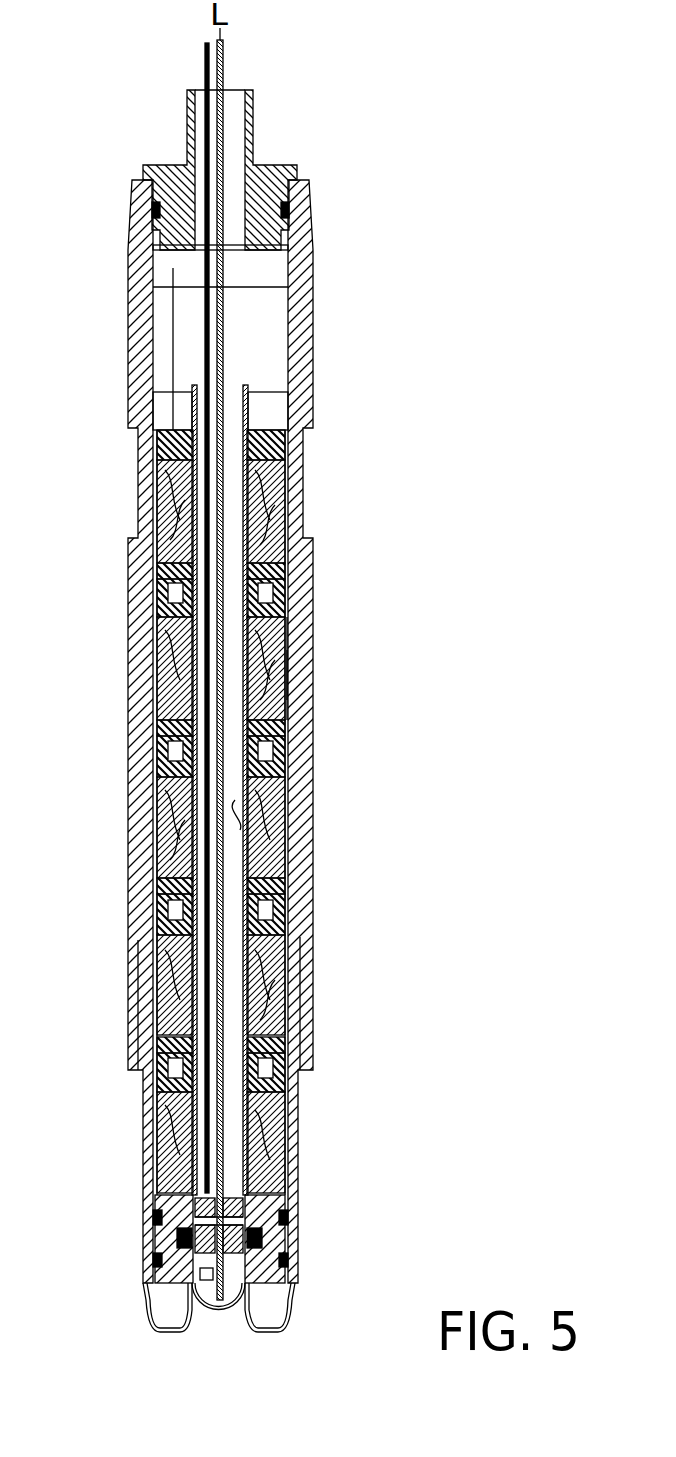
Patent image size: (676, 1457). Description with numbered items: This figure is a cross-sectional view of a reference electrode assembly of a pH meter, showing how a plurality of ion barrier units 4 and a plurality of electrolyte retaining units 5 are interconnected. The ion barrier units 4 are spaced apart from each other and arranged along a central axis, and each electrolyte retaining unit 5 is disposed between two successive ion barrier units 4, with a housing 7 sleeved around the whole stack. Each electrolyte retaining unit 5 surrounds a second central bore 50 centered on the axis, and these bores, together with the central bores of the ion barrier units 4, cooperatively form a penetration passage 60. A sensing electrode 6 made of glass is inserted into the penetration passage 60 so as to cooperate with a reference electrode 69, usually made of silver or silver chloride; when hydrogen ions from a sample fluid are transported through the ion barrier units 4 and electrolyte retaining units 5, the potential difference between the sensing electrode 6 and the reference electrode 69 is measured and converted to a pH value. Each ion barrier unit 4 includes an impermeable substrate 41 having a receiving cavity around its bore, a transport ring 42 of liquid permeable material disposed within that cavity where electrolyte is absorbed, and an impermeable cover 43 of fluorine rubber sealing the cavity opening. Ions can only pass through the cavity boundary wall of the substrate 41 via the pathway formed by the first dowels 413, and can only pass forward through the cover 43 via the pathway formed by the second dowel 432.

The ion barrier unit 4 is at (303, 585).
The electrolyte retaining unit 5 is at (278, 465).
The sensing electrode 6 is at (203, 1313).
The housing 7 is at (132, 693).
The substrate 41 is at (158, 613).
The transport ring 42 is at (170, 593).
The cover 43 is at (160, 567).
The second central bore 50 is at (253, 847).
The penetration passage 60 is at (258, 1102).
The reference electrode 69 is at (173, 498).
The first dowel 413 is at (280, 627).
The second dowel 432 is at (287, 690).